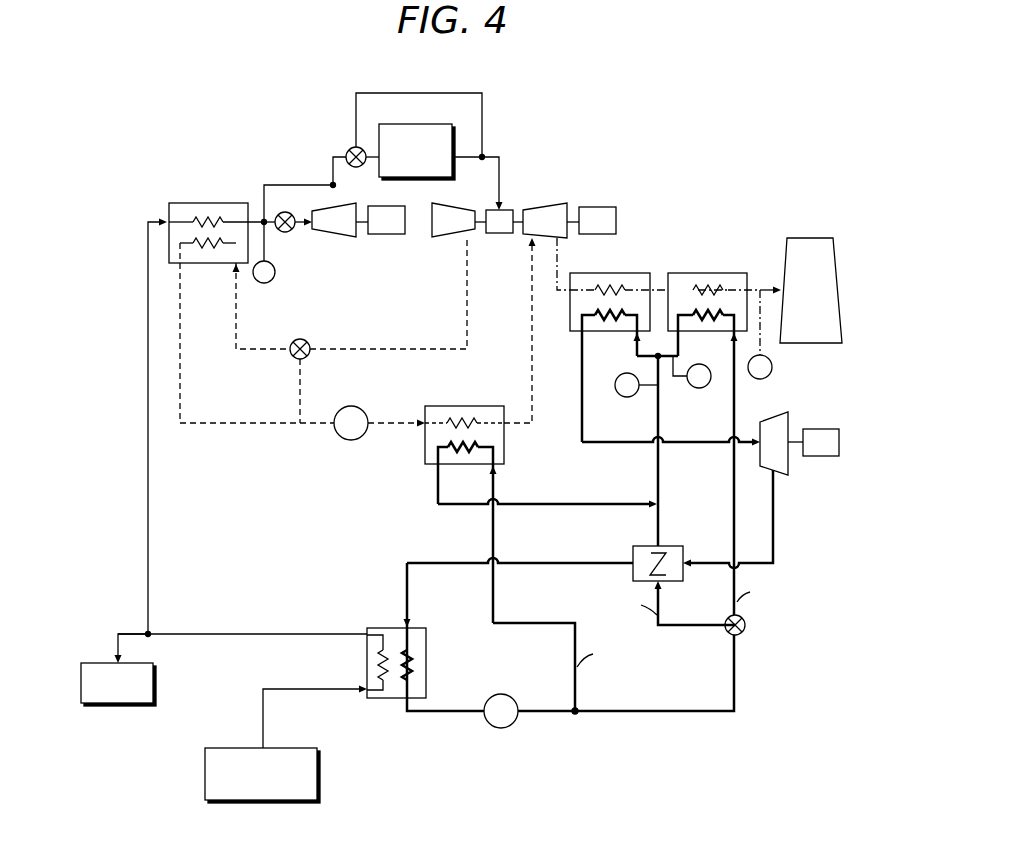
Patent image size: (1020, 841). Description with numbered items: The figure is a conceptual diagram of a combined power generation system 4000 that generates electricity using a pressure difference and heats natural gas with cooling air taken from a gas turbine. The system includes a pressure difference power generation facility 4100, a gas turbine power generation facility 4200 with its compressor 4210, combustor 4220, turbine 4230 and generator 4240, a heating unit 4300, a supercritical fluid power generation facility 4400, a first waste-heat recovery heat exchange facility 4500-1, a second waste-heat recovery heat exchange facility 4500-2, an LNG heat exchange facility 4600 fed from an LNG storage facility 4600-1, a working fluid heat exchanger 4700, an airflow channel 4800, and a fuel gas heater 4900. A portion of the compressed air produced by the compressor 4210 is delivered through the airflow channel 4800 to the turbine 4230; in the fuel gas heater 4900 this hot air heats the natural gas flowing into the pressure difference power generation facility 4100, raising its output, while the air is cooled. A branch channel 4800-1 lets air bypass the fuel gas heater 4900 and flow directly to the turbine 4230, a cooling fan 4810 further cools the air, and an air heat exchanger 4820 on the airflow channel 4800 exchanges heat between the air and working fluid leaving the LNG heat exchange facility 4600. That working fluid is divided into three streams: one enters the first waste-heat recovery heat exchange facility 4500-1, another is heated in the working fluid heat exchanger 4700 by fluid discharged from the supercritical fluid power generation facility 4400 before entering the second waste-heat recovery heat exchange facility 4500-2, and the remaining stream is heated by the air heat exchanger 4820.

The combined power generation system 4000 is at (702, 110).
The pressure difference power generation facility 4100 is at (328, 242).
The gas turbine power generation facility 4200 is at (574, 157).
The compressor 4210 is at (437, 238).
The combustor 4220 is at (498, 233).
The turbine 4230 is at (548, 203).
The gas turbine generator 4240 is at (598, 207).
The heating unit 4300 is at (415, 124).
The supercritical fluid power generation facility 4400 is at (810, 480).
The first waste-heat recovery heat exchange facility 4500-1 is at (687, 272).
The second waste-heat recovery heat exchange facility 4500-2 is at (589, 272).
The LNG heat exchange facility 4600 is at (392, 627).
The LNG storage facility 4600-1 is at (274, 748).
The working fluid heat exchanger 4700 is at (651, 545).
The airflow channel 4800 is at (396, 349).
The branch channel 4800-1 is at (300, 393).
The cooling fan 4810 is at (351, 406).
The air heat exchanger 4820 is at (468, 406).
The fuel gas heater 4900 is at (203, 203).